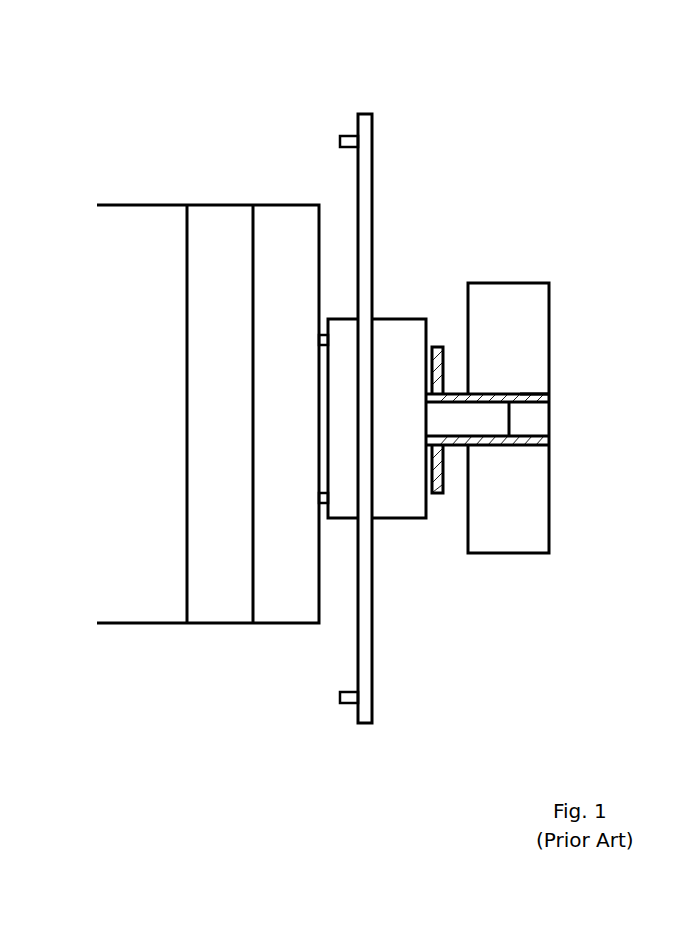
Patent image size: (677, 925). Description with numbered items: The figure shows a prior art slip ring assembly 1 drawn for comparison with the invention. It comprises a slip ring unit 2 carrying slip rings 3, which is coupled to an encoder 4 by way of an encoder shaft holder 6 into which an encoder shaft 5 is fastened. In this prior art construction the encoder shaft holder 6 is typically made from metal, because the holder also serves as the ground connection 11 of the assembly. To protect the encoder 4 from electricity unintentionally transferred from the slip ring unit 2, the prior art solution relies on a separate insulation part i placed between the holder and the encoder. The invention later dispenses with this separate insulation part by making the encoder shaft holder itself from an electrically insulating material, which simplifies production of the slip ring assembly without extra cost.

The prior art slip ring assembly 1 is at (86, 98).
The slip ring unit 2 is at (137, 584).
The slip rings 3 is at (223, 597).
The encoder 4 is at (513, 512).
The encoder shaft 5 is at (485, 420).
The encoder shaft holder 6 is at (400, 352).
The ground connection 11 is at (365, 703).
The separate insulation part i is at (525, 394).